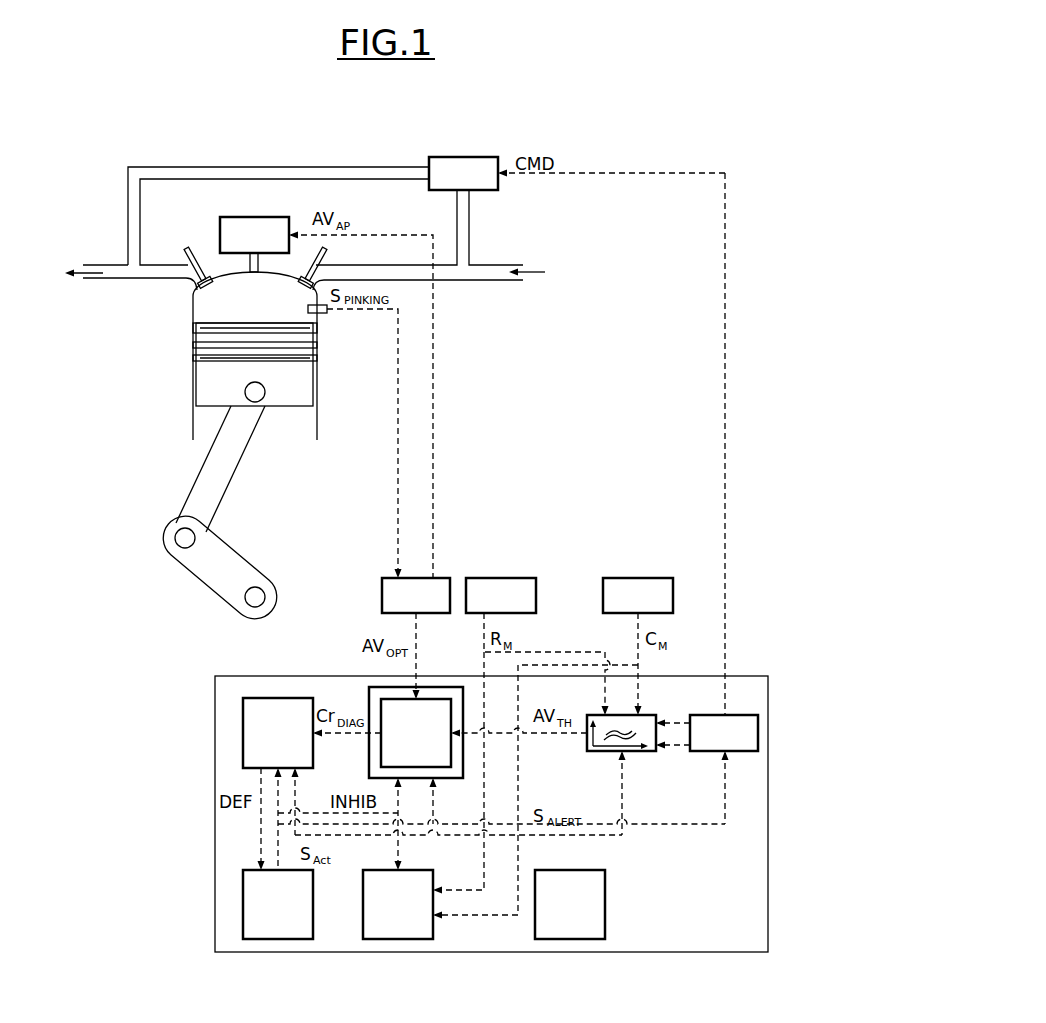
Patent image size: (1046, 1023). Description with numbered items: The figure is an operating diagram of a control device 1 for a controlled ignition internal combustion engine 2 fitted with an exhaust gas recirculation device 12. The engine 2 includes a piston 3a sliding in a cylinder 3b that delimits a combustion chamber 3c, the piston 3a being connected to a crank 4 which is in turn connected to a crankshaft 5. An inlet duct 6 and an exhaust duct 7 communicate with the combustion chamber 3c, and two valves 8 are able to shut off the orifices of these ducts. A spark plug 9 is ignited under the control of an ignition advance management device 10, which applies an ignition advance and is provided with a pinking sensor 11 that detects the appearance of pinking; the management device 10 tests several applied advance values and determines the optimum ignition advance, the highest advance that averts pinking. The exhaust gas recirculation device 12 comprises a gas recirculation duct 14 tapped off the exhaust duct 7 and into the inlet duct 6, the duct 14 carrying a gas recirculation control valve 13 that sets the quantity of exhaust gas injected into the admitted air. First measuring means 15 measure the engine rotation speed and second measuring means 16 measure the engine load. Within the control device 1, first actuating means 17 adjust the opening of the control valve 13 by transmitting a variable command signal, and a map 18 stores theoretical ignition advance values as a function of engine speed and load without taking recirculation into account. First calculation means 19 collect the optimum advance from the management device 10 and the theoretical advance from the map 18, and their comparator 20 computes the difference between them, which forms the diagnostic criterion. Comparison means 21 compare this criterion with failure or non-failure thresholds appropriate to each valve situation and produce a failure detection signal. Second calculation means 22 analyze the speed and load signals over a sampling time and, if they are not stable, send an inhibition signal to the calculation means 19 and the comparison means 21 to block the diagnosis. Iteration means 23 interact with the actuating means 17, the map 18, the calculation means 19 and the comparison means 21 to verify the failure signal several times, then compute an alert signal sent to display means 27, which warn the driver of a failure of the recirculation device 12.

The control device 1 is at (768, 672).
The internal combustion engine 2 is at (190, 389).
The piston 3a is at (288, 404).
The cylinder 3b is at (192, 304).
The combustion chamber 3c is at (210, 310).
The crank 4 is at (200, 481).
The crankshaft 5 is at (215, 578).
The inlet duct 6 is at (497, 261).
The exhaust duct 7 is at (100, 262).
The valves 8 is at (185, 257).
The spark plug 9 is at (254, 244).
The ignition advance management device 10 is at (416, 595).
The pinking sensor 11 is at (325, 314).
The exhaust gas recirculation device 12 is at (467, 149).
The gas recirculation control valve 13 is at (463, 173).
The gas recirculation duct 14 is at (290, 167).
The first measuring means 15 is at (501, 595).
The second measuring means 16 is at (638, 595).
The first actuating means 17 is at (724, 733).
The map 18 is at (642, 752).
The first calculation means 19 is at (394, 732).
The comparator 20 is at (416, 733).
The comparison means 21 is at (278, 733).
The second calculation means 22 is at (398, 904).
The iteration means 23 is at (278, 904).
The display means 27 is at (570, 904).